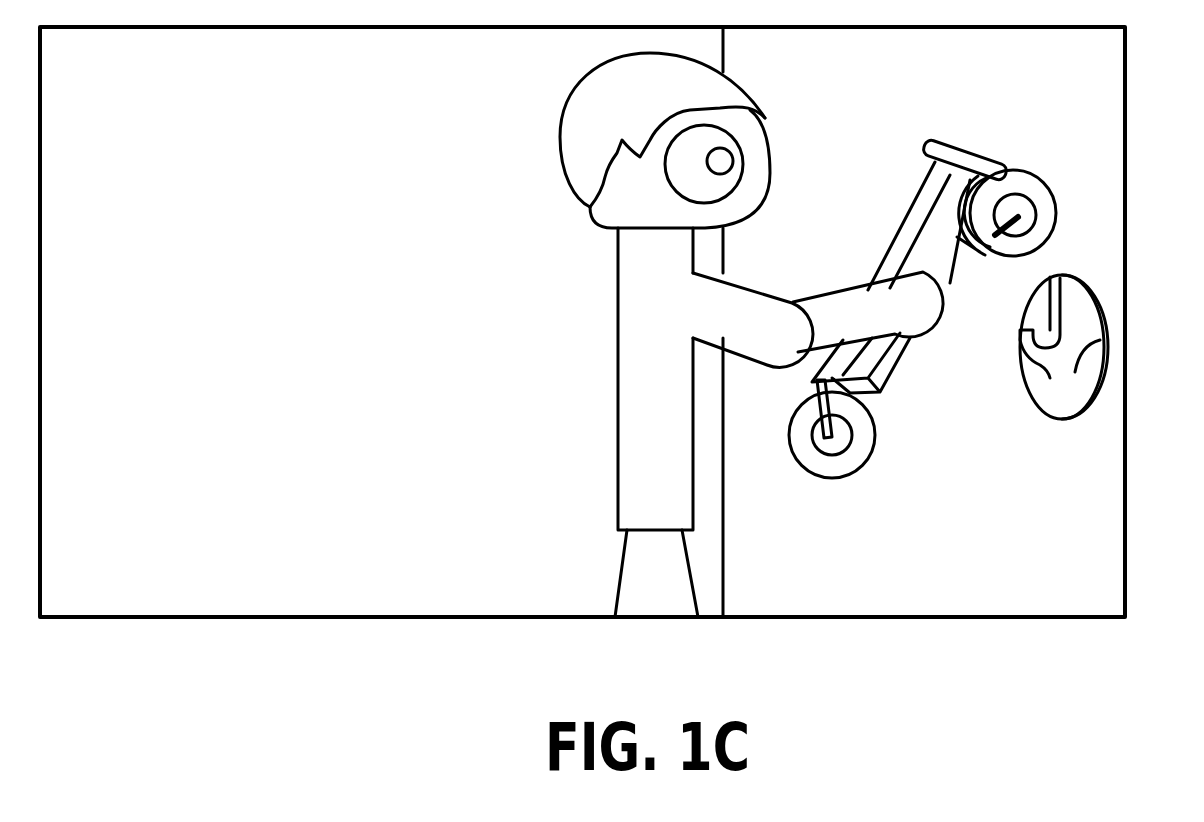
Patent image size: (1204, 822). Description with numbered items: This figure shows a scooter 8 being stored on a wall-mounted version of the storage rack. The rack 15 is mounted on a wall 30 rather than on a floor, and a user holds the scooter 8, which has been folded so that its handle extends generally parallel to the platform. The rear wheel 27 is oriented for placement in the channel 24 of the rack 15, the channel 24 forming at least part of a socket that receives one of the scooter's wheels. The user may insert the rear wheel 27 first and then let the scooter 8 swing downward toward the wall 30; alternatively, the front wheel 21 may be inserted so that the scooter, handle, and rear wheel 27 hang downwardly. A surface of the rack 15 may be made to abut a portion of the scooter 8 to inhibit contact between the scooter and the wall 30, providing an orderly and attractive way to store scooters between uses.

The scooter 8 is at (947, 185).
The rear wheel 27 is at (1030, 183).
The front wheel 21 is at (862, 427).
The rack 15 is at (1103, 340).
The channel 24 is at (1065, 273).
The wall 30 is at (822, 592).